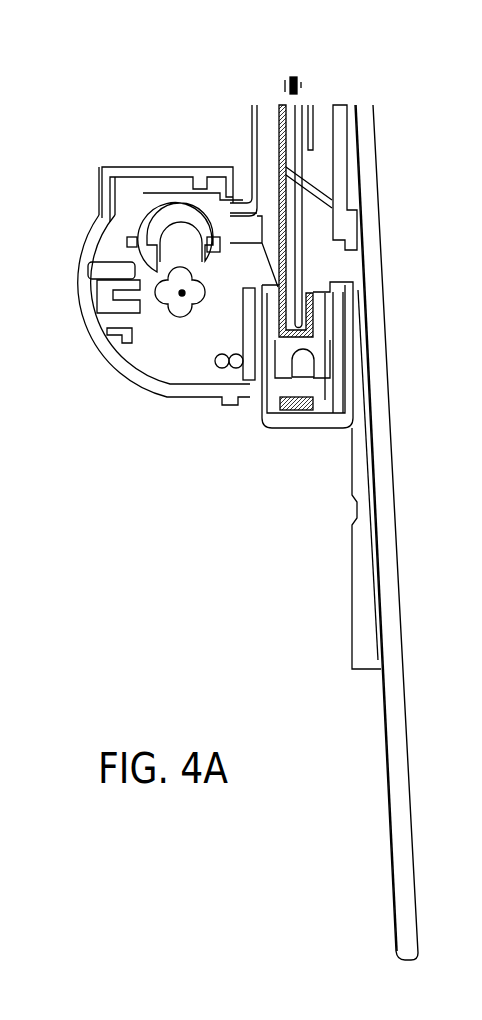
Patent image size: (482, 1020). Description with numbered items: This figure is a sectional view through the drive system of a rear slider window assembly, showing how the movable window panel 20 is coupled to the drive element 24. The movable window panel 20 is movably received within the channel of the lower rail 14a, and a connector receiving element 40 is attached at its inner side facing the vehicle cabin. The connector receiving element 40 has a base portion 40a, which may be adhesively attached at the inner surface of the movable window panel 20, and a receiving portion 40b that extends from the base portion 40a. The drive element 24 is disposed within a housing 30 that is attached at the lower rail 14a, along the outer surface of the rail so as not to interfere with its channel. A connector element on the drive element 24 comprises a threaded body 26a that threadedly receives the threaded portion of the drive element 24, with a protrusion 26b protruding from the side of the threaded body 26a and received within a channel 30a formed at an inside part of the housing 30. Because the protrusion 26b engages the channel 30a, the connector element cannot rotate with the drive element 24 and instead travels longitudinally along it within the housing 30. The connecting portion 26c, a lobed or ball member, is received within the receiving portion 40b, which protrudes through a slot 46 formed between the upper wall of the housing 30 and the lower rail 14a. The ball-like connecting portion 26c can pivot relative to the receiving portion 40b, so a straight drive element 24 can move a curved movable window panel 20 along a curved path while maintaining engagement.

The lower rail 14a is at (280, 430).
The movable window panel 20 is at (297, 228).
The drive element 24 is at (182, 292).
The threaded body 26a is at (180, 335).
The protrusion 26b is at (130, 315).
The connecting portion 26c is at (175, 248).
The housing 30 is at (130, 296).
The channel 30a is at (123, 333).
The connector receiving element 40 is at (160, 165).
The base portion 40a is at (257, 127).
The receiving portion 40b is at (148, 197).
The slot 46 is at (258, 249).